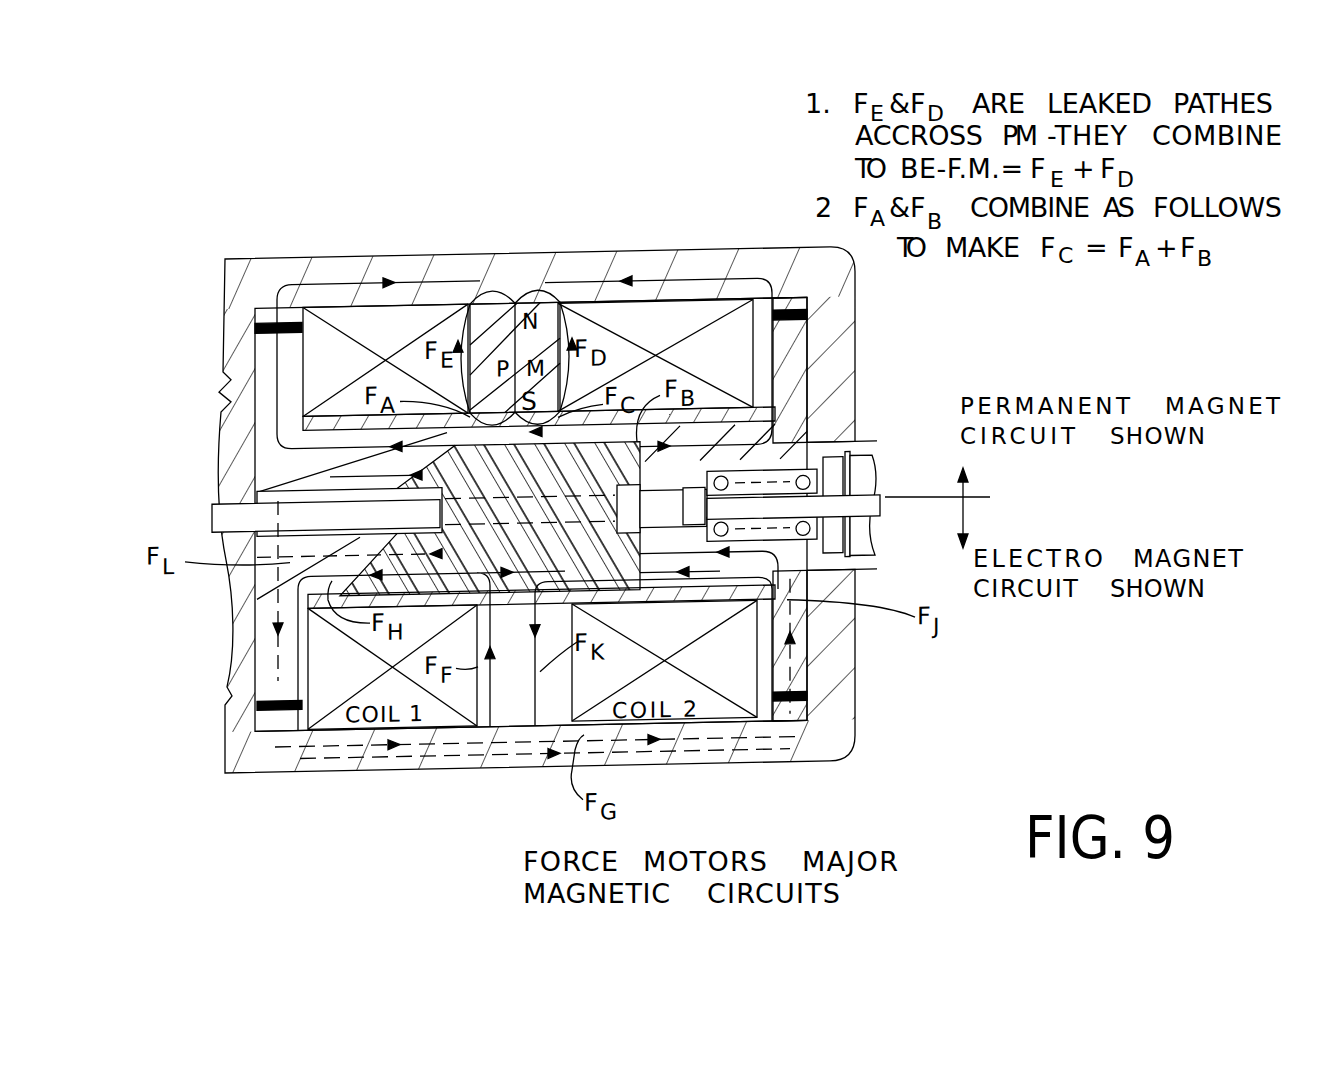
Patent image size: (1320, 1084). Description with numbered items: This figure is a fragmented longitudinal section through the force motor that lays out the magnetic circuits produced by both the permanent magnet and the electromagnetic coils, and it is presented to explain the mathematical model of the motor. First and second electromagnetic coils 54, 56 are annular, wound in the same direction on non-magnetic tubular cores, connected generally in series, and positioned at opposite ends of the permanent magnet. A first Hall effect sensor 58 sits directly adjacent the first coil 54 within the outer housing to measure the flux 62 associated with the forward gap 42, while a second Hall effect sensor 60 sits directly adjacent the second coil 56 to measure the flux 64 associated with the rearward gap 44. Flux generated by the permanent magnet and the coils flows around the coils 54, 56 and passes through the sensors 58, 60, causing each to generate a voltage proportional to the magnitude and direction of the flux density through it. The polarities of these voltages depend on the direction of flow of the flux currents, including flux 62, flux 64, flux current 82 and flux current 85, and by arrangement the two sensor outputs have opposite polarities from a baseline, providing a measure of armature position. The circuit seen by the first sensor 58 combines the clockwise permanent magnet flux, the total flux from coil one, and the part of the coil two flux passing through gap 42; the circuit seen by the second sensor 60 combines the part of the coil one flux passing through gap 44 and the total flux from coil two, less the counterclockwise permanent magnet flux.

The forward gap 42 is at (345, 474).
The rearward gap 44 is at (806, 412).
The first electromagnetic coil 54 is at (347, 369).
The second electromagnetic coil 56 is at (747, 375).
The first Hall effect sensor 58 is at (250, 327).
The second Hall effect sensor 60 is at (806, 325).
The flux 62 is at (342, 292).
The flux 64 is at (674, 271).
The flux current 82 is at (300, 742).
The flux current 85 is at (283, 738).